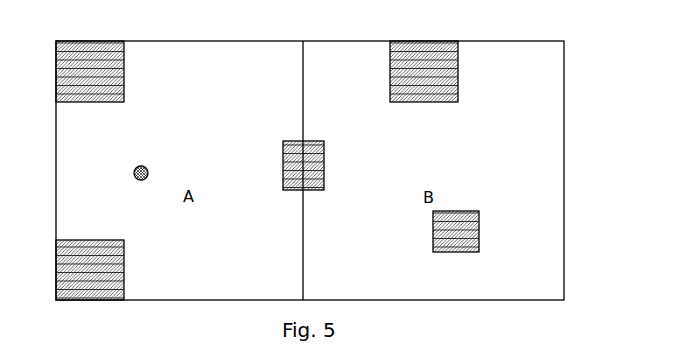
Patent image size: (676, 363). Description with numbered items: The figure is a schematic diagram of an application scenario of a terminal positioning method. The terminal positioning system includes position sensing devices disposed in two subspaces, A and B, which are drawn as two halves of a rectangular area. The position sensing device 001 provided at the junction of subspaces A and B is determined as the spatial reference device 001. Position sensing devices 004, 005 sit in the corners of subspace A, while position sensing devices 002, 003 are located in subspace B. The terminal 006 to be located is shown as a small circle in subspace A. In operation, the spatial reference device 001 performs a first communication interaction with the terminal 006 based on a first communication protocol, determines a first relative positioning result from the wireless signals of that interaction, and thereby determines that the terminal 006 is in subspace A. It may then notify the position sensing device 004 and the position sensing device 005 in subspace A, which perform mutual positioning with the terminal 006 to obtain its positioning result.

The spatial reference device 001 is at (317, 158).
The position sensing device 002 is at (463, 230).
The position sensing device 003 is at (448, 83).
The position sensing device 004 is at (117, 278).
The position sensing device 005 is at (117, 82).
The terminal 006 is at (145, 167).